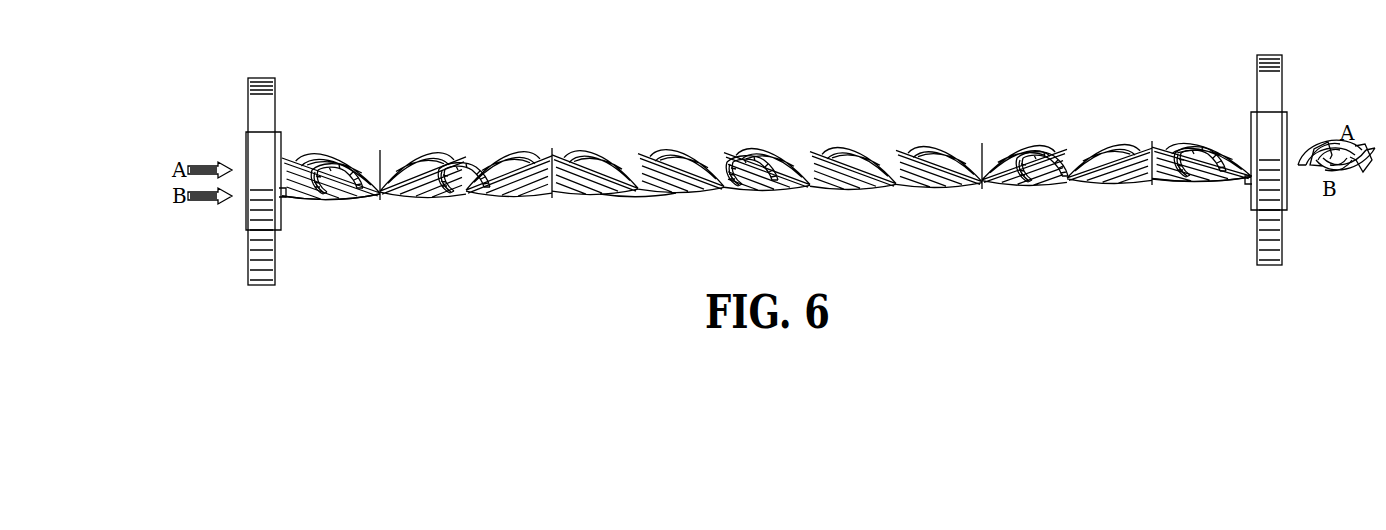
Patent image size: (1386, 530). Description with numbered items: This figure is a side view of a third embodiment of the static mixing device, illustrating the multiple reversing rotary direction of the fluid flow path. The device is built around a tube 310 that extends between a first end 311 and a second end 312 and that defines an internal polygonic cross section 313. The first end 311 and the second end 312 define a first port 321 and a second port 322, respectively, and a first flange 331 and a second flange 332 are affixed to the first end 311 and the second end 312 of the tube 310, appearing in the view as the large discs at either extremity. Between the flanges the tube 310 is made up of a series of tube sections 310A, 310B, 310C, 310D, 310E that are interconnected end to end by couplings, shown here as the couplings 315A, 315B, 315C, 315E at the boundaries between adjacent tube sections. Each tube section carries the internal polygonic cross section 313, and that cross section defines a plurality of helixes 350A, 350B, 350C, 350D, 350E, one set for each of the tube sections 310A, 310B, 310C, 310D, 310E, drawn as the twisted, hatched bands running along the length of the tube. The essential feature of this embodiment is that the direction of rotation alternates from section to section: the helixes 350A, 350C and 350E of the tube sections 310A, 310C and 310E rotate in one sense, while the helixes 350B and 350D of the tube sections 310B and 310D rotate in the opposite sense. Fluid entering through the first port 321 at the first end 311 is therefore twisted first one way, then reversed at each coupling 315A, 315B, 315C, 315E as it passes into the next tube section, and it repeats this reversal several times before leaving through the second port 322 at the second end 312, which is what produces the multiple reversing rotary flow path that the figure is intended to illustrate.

The tube 310 is at (766, 180).
The tube section 310A is at (333, 152).
The tube section 310B is at (485, 153).
The tube section 310C is at (716, 150).
The tube section 310D is at (1072, 141).
The tube section 310E is at (1205, 143).
The first end 311 is at (287, 194).
The second end 312 is at (1249, 181).
The internal polygonic cross section 313 is at (634, 197).
The coupling 315A is at (380, 152).
The coupling 315B is at (552, 150).
The coupling 315C is at (982, 145).
The coupling 315E is at (1152, 143).
The first port 321 is at (333, 212).
The second port 322 is at (1212, 189).
The first flange 331 is at (261, 78).
The second flange 332 is at (1270, 55).
The helixes 350A is at (380, 198).
The helixes 350B is at (497, 200).
The helixes 350C is at (752, 190).
The helixes 350D is at (1093, 187).
The helixes 350E is at (1160, 184).